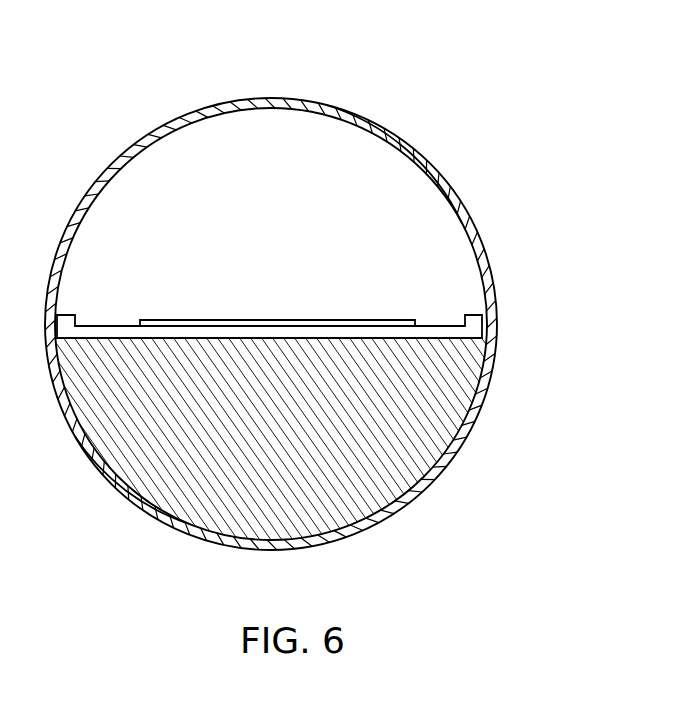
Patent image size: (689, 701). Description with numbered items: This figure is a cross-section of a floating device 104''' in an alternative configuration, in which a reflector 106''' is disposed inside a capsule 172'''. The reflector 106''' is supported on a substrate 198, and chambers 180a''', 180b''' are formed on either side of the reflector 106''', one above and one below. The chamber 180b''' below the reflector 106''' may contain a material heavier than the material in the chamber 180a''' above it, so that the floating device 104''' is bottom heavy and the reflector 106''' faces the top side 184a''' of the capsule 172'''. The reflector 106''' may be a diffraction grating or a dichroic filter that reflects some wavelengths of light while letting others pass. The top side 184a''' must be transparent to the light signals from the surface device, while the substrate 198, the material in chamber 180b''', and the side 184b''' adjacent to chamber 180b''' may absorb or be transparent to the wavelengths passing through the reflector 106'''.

The floating device 104''' is at (271, 282).
The reflector 106''' is at (277, 187).
The capsule 172''' is at (305, 324).
The chamber 180a''' is at (124, 138).
The chamber 180b''' is at (324, 470).
The top side 184a''' is at (408, 148).
The side 184b''' is at (262, 519).
The substrate 198 is at (417, 335).